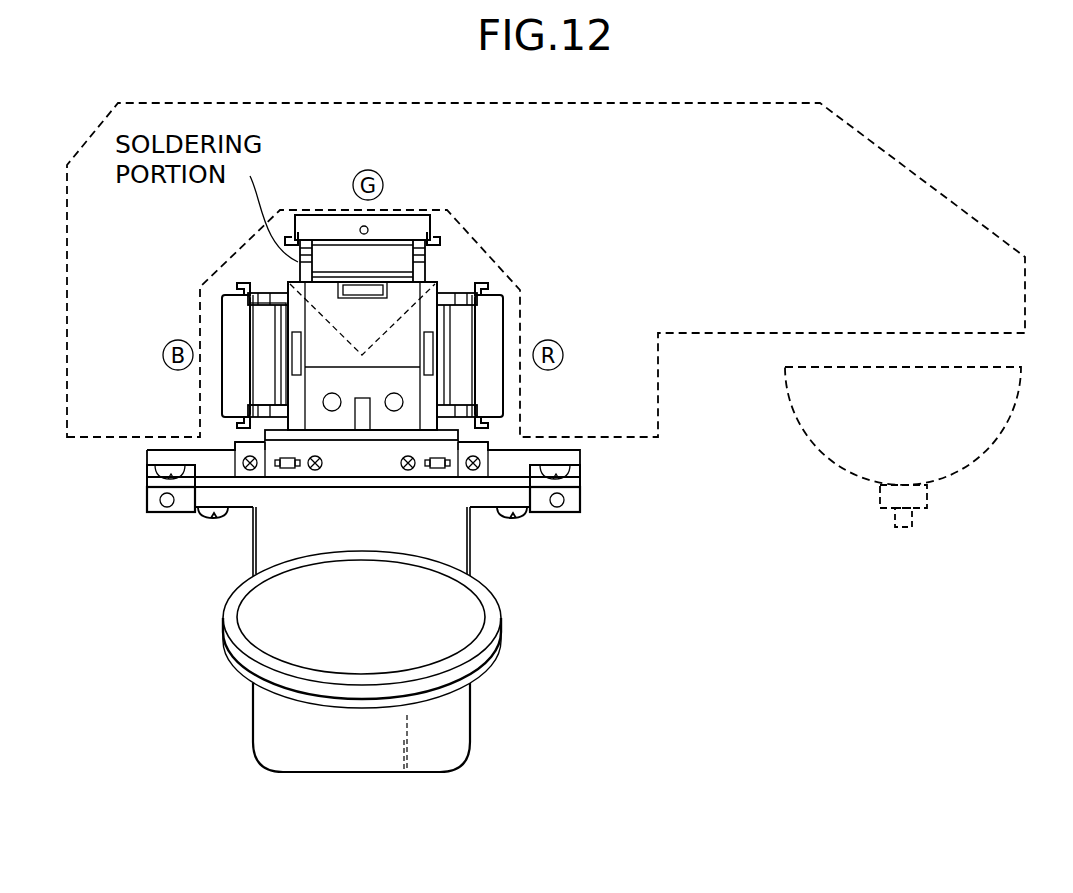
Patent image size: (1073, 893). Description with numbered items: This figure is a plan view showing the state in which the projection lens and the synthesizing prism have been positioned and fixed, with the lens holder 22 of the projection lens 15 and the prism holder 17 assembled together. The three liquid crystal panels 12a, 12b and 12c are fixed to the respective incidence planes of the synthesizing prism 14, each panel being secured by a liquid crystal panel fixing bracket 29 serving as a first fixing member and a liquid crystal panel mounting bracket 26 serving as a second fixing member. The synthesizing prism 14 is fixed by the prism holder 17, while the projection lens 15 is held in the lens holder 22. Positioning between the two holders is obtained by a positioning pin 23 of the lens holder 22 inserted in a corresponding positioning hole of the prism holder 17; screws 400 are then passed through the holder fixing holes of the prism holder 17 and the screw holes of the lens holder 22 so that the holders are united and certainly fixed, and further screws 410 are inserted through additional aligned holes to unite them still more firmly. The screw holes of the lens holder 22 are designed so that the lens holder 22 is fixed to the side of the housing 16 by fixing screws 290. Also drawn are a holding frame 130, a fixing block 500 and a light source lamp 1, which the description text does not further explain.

The light source lamp 1 is at (965, 468).
The liquid crystal panel 12a is at (497, 327).
The liquid crystal panel 12b is at (313, 232).
The liquid crystal panel 12c is at (230, 326).
The synthesizing prism 14 is at (440, 300).
The projection lens 15 is at (300, 772).
The housing 16 is at (585, 450).
The prism holder 17 is at (208, 470).
The lens holder 22 is at (413, 557).
The positioning pin 23 is at (287, 475).
The liquid crystal panel mounting bracket 26 is at (440, 242).
The liquid crystal panel fixing bracket 29 is at (428, 272).
The holding frame 130 is at (288, 318).
The fixing screw 290 is at (148, 474).
The screw 400 is at (403, 470).
The screw 410 is at (250, 510).
The fixing block 500 is at (150, 505).